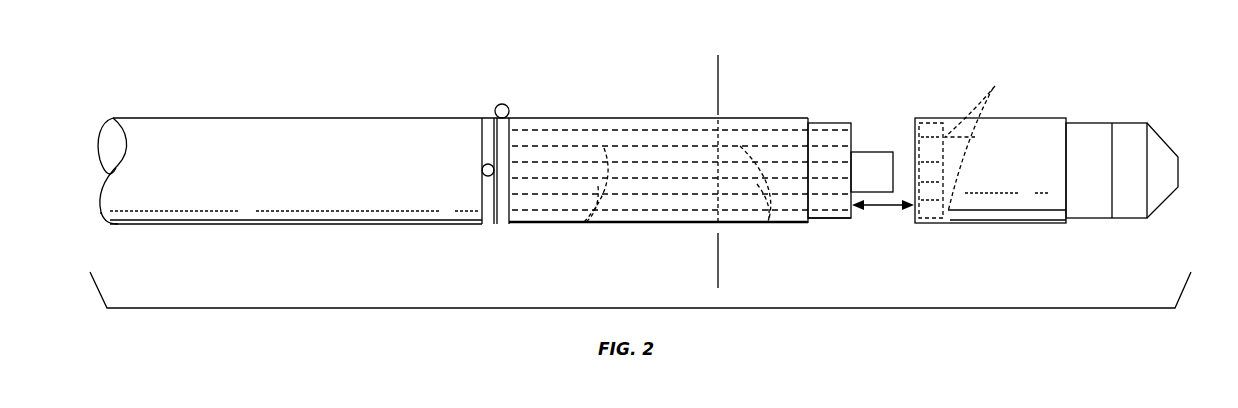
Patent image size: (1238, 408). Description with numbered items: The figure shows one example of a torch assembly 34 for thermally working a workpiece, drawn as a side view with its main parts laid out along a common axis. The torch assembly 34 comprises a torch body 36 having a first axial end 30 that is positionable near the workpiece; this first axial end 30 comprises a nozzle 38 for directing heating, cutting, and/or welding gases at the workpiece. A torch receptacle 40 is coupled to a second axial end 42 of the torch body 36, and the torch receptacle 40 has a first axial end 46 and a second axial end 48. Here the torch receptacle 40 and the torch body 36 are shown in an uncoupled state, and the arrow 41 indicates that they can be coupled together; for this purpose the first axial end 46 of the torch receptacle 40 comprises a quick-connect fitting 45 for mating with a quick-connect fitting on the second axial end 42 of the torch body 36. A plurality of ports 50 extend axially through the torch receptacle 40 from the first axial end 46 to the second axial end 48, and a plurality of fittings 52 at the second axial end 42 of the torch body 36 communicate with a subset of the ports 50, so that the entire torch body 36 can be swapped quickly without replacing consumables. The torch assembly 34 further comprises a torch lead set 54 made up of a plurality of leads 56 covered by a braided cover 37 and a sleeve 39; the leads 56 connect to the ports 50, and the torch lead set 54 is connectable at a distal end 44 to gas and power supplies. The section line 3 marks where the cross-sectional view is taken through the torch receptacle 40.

The section line 3- 3 is at (706, 70).
The first axial end 30 is at (1159, 112).
The torch assembly 34 is at (306, 78).
The torch body 36 is at (1025, 118).
The braided cover 37 is at (285, 226).
The nozzle 38 is at (1180, 172).
The sleeve 39 is at (587, 118).
The torch receptacle 40 is at (826, 122).
The arrow 41 is at (883, 208).
The second axial end 42 is at (929, 234).
The distal end 44 is at (106, 238).
The quick-connect fitting 45 is at (871, 146).
The first axial end 46 is at (843, 232).
The second axial end 48 is at (739, 104).
The ports 50 is at (768, 222).
The fittings 52 is at (978, 139).
The torch lead set 54 is at (472, 238).
The leads 56 is at (584, 222).